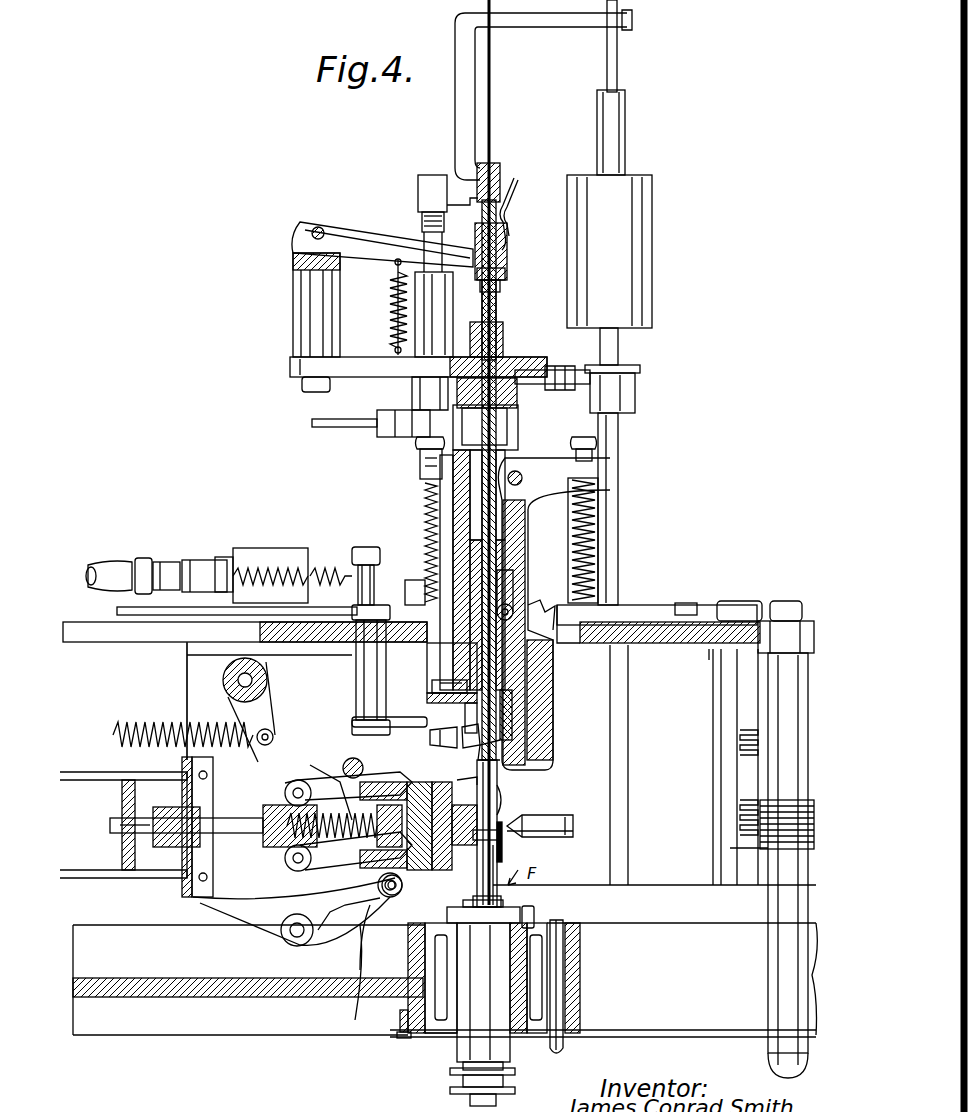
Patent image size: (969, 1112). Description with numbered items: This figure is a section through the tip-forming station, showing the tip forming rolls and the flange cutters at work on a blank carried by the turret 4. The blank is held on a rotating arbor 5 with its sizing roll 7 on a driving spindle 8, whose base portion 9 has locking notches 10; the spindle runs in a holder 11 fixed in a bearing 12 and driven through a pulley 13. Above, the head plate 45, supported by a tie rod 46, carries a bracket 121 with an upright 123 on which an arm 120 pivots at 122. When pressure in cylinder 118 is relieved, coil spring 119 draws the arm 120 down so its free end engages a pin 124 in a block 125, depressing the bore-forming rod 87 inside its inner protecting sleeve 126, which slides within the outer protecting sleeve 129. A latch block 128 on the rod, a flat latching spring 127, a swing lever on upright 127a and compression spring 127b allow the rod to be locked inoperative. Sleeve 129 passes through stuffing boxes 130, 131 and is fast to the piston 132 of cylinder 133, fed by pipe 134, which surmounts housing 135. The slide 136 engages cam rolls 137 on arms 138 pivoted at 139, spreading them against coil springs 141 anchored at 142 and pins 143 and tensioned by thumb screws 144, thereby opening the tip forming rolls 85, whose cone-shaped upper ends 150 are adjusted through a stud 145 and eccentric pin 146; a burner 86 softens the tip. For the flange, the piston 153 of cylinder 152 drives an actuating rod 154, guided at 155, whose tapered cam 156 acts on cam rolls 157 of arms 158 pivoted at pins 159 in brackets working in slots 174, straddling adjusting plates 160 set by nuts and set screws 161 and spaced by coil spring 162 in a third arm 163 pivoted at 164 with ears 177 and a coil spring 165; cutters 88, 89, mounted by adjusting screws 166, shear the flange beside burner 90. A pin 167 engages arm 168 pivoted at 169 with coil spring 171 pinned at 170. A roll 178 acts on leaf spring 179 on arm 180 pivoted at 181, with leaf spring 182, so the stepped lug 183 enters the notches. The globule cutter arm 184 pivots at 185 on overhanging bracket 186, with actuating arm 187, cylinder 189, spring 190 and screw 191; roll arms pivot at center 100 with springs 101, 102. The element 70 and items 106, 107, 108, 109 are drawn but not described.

The turret 4 is at (612, 922).
The blank supporting arbor 5 is at (498, 782).
The sizing roll 7 is at (502, 842).
The driving spindle 8 is at (497, 882).
The spindle base portion 9 is at (524, 908).
The locking notch 10 is at (536, 914).
The vertical holder 11 is at (470, 1035).
The bearing 12 is at (520, 976).
The driven pulley 13 is at (455, 1092).
The head plate 45 is at (152, 637).
The tie rod 46 is at (770, 958).
The bar 70 is at (563, 993).
The tip forming roll 85 is at (518, 738).
The stationary burner 86 is at (432, 742).
The bore-forming wire 87 is at (492, 76).
The shearing cutter 88 is at (498, 858).
The shearing cutter 89 is at (500, 798).
The stationary burner 90 is at (558, 822).
The common pivot center 100 is at (748, 602).
The spring tension 101 is at (760, 740).
The spring tension 102 is at (808, 847).
The cylinder 106 is at (636, 245).
The rod 107 is at (618, 62).
The tube 108 is at (552, 22).
The sleeve 109 is at (626, 132).
The cylinder 118 is at (416, 323).
The coil spring 119 is at (390, 297).
The arm 120 is at (376, 242).
The bracket 121 is at (385, 365).
The pivot 122 is at (322, 229).
The upright 123 is at (298, 313).
The pin 124 is at (507, 256).
The block 125 is at (505, 272).
The inner protecting sleeve 126 is at (500, 285).
The flat latching spring 127 is at (509, 216).
The upright 127a is at (395, 272).
The compression spring 127b is at (420, 214).
The latch block 128 is at (502, 168).
The outer protecting sleeve 129 is at (497, 311).
The stuffing box 130 is at (503, 335).
The stuffing box 131 is at (506, 413).
The piston 132 is at (517, 395).
The pressure cylinder 133 is at (518, 425).
The pipe 134 is at (628, 370).
The housing 135 is at (420, 472).
The slide 136 is at (532, 510).
The cam roll 137 is at (530, 605).
The arm 138 is at (598, 532).
The pivot 139 is at (518, 472).
The coil spring 141 is at (424, 506).
The spring fastening 142 is at (598, 480).
The pin 143 is at (596, 604).
The thumb screw 144 is at (418, 446).
The stud 145 is at (440, 697).
The eccentric pin 146 is at (466, 720).
The cone-shaped upper end 150 is at (520, 720).
The cylinder 152 is at (88, 878).
The piston 153 is at (128, 872).
The actuating rod 154 is at (240, 834).
The guide 155 is at (210, 805).
The tapered cam 156 is at (268, 848).
The cam roll 157 is at (296, 780).
The arm 158 is at (343, 764).
The pivot pin 159 is at (372, 790).
The adjusting plate 160 is at (446, 782).
The nuts and set screws 161 is at (414, 782).
The coil spring 162 is at (480, 810).
The third arm 163 is at (525, 838).
The pivot 164 is at (340, 840).
The coil spring 165 is at (340, 793).
The adjusting screw 166 is at (480, 775).
The pin 167 is at (200, 812).
The arm 168 is at (266, 705).
The pivot 169 is at (240, 680).
The spring pin 170 is at (285, 740).
The coil spring 171 is at (157, 724).
The elongated slot 174 is at (350, 765).
The ear 177 is at (400, 760).
The roll 178 is at (375, 939).
The leaf spring 179 is at (355, 920).
The arm 180 is at (350, 973).
The pivot 181 is at (295, 940).
The leaf spring 182 is at (255, 905).
The stepped lug 183 is at (395, 1022).
The arm 184 is at (352, 722).
The pivot 185 is at (356, 666).
The overhanging bracket 186 is at (117, 610).
The actuating arm 187 is at (363, 560).
The cylinder 189 is at (205, 560).
The spring 190 is at (275, 565).
The adjustable screw 191 is at (228, 556).